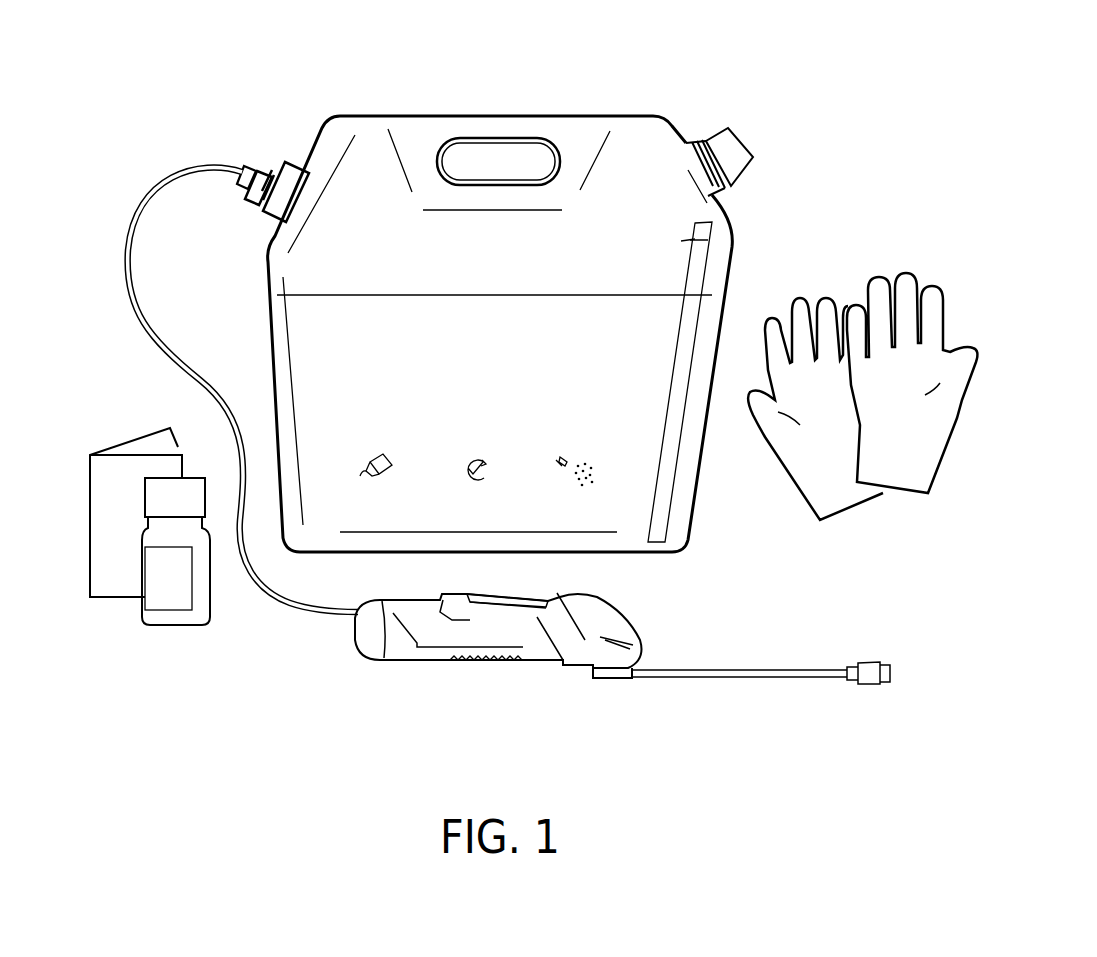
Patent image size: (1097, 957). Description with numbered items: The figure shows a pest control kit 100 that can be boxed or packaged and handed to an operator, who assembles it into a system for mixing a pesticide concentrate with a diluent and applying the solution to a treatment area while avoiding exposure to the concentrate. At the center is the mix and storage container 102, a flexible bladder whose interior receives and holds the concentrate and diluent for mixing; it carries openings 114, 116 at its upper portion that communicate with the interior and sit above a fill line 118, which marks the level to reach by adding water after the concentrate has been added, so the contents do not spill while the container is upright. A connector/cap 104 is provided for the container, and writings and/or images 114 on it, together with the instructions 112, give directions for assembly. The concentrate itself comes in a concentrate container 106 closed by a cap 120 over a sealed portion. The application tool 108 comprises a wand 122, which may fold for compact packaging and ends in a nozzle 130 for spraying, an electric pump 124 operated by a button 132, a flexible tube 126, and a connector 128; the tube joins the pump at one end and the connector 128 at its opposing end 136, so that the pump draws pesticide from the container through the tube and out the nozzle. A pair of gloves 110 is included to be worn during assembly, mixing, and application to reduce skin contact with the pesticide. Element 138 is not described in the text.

The pest control kit 100 is at (128, 131).
The mix and storage container 102 is at (733, 247).
The connector/cap 104 is at (753, 157).
The concentrate container 106 is at (140, 614).
The application tool 108 is at (630, 622).
The pair of gloves 110 is at (935, 290).
The instructions 112 is at (92, 453).
The opening 114 is at (277, 222).
The opening 116 is at (692, 140).
The fill line 118 is at (703, 247).
The cap 120 is at (192, 475).
The wand 122 is at (775, 668).
The pump 124 is at (585, 603).
The flexible tube 126 is at (188, 160).
The connector 128 is at (283, 157).
The nozzle 130 is at (885, 687).
The button 132 is at (478, 593).
The opposing end 136 is at (332, 607).
The fitting 138 is at (233, 175).